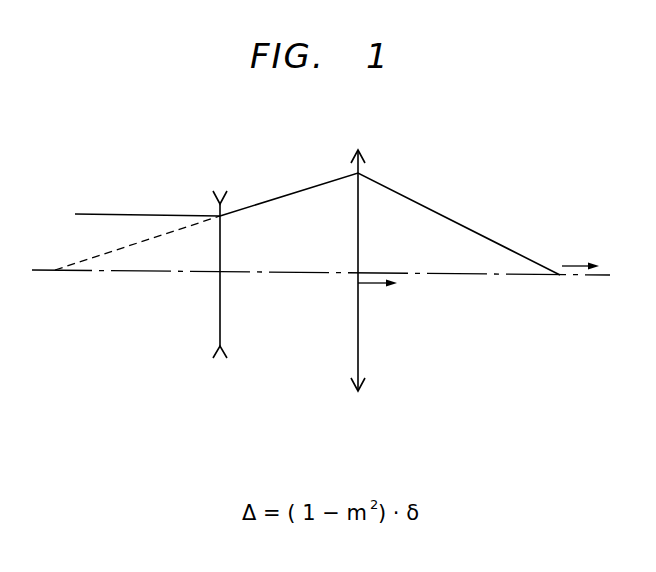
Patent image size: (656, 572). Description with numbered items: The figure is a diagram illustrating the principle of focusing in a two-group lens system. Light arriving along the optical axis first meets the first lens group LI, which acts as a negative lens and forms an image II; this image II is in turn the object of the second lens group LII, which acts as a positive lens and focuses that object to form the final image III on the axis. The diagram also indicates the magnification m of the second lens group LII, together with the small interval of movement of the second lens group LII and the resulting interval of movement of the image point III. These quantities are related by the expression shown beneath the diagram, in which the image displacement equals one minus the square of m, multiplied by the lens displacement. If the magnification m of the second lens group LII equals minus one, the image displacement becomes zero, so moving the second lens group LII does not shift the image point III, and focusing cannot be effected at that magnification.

The first lens group LI is at (219, 237).
The second lens group LII is at (358, 254).
The magnification m is at (358, 404).
The final image III is at (568, 296).
The image formed by first lens group II is at (64, 292).